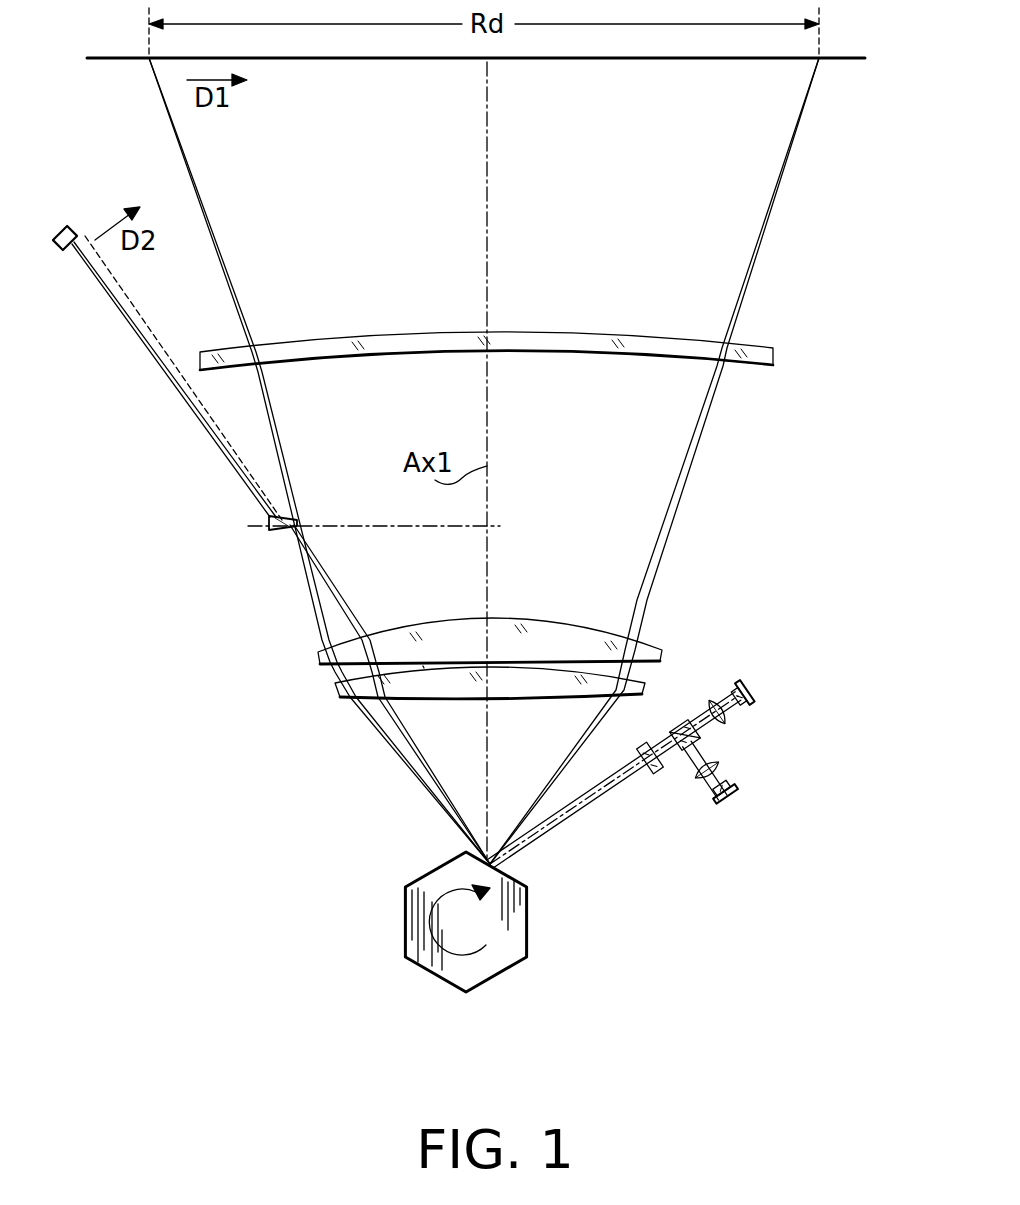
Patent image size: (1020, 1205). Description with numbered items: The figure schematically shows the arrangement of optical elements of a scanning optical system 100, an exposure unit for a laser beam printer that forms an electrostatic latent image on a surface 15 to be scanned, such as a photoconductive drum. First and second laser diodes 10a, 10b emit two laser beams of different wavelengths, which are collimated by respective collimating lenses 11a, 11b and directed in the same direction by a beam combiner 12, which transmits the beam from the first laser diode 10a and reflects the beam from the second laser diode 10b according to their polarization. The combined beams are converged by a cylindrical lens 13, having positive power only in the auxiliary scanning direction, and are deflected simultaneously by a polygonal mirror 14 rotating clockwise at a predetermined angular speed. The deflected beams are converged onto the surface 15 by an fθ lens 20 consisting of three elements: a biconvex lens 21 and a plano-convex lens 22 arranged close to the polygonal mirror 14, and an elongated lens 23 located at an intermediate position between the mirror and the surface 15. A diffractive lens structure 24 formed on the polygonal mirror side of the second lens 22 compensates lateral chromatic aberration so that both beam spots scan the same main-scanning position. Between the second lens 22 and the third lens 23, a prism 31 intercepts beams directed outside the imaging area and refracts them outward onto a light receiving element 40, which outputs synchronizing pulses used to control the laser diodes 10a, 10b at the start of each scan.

The scanning optical system 100 is at (836, 467).
The surface to be scanned 15 is at (845, 60).
The fθ lens 20 is at (815, 372).
The elongated lens (third lens) 23 is at (758, 366).
The plano-convex lens (second lens) 22 is at (665, 656).
The biconvex lens (first lens) 21 is at (648, 688).
The diffractive lens structure 24 is at (423, 667).
The polygonal mirror 14 is at (412, 927).
The cylindrical lens 13 is at (648, 772).
The beam combiner 12 is at (678, 748).
The collimating lens 11a is at (728, 722).
The first laser diode 10a is at (782, 693).
The collimating lens 11b is at (718, 762).
The second laser diode 10b is at (725, 800).
The light receiving element 40 is at (66, 226).
The prism 31 is at (268, 530).